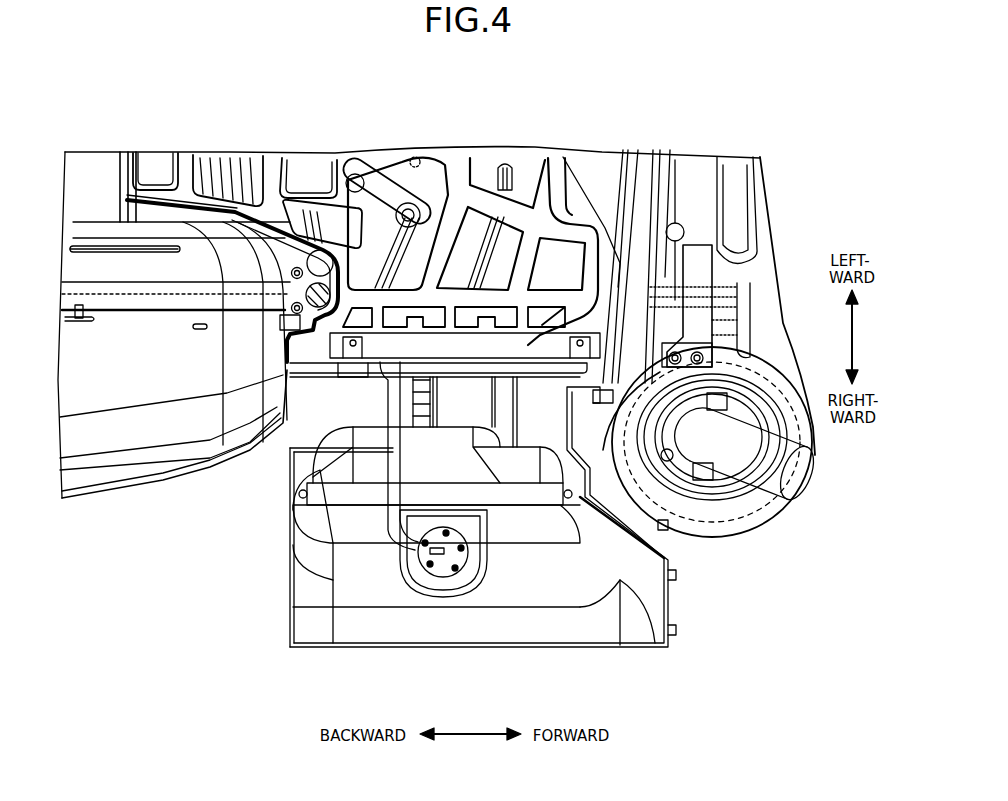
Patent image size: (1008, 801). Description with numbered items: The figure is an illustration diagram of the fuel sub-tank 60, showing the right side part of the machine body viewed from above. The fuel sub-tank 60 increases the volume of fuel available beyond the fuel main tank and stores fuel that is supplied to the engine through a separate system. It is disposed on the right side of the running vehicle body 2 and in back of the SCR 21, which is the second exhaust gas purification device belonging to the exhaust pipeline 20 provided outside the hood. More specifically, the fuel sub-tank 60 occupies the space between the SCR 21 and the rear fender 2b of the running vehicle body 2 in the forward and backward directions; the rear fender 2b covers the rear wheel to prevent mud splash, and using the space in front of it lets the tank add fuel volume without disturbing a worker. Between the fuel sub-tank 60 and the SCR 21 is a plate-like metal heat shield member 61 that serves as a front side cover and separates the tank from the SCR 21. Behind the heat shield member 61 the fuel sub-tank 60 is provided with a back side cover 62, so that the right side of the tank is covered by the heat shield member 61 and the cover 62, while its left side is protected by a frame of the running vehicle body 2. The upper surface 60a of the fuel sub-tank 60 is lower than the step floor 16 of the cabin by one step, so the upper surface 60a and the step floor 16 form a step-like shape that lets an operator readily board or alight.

The running vehicle body 2 is at (110, 497).
The rear fender 2b is at (170, 484).
The step floor 16 is at (520, 162).
The exhaust pipeline 20 is at (798, 300).
The second exhaust gas purification device (SCR) 21 is at (747, 517).
The fuel sub-tank 60 is at (303, 513).
The upper surface 60a is at (343, 587).
The heat shield member 61 is at (670, 600).
The back side cover 62 is at (290, 565).